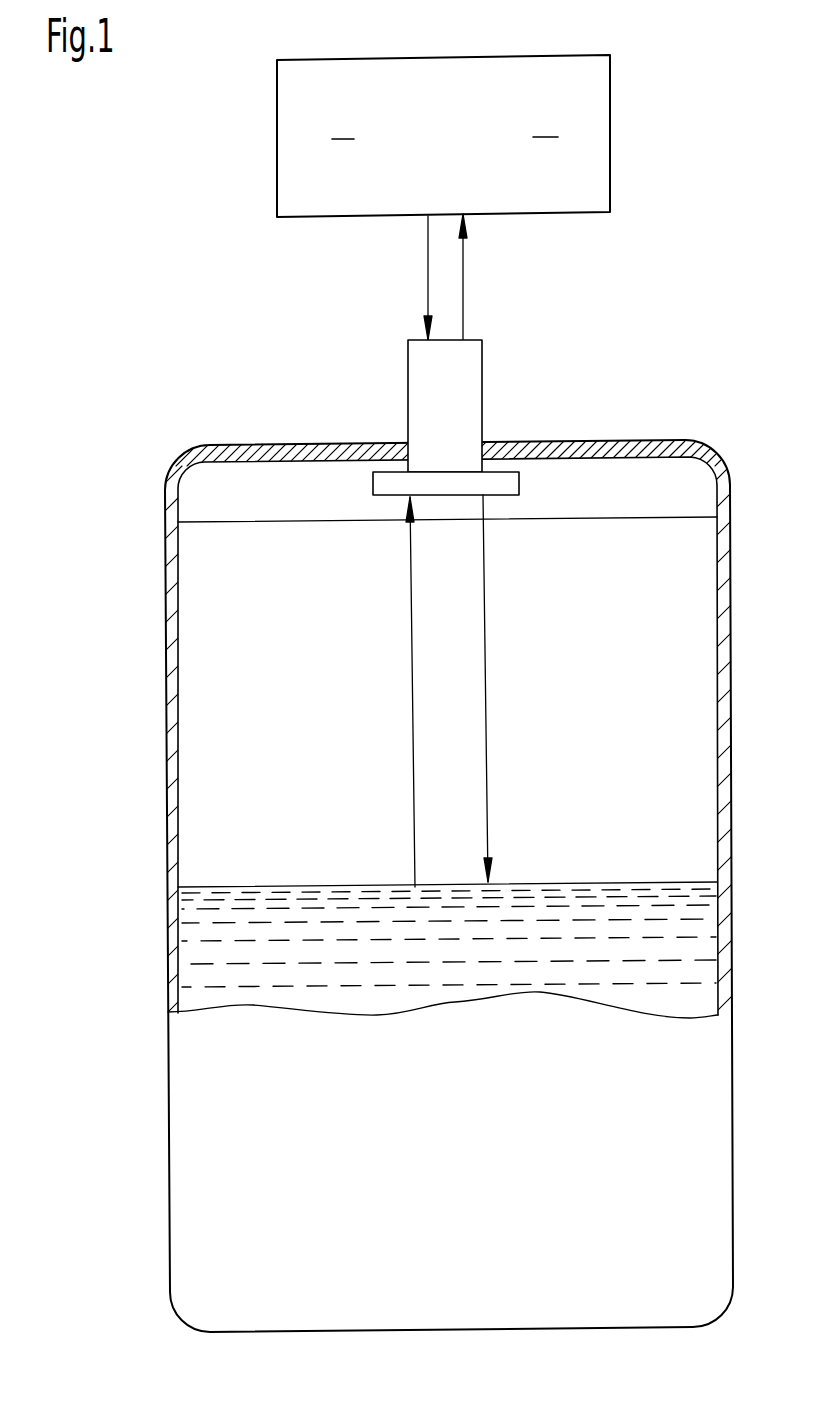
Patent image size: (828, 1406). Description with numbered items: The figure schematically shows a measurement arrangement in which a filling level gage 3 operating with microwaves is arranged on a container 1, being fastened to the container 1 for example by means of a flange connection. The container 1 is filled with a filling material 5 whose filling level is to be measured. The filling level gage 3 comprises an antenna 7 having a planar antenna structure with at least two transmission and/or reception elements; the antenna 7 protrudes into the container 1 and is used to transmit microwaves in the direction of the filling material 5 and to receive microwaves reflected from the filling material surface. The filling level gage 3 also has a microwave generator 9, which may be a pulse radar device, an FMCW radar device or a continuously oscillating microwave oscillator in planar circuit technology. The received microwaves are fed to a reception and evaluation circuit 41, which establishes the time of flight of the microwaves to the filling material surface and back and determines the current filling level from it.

The container 1 is at (427, 886).
The filling level gage 3 is at (339, 197).
The filling material 5 is at (411, 950).
The antenna 7 is at (409, 411).
The microwave generator 9 is at (343, 122).
The reception and evaluation circuit 41 is at (545, 120).